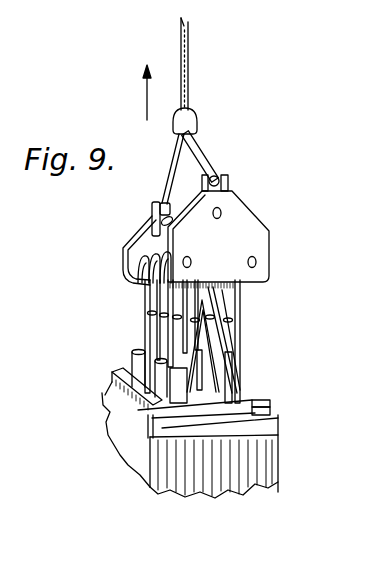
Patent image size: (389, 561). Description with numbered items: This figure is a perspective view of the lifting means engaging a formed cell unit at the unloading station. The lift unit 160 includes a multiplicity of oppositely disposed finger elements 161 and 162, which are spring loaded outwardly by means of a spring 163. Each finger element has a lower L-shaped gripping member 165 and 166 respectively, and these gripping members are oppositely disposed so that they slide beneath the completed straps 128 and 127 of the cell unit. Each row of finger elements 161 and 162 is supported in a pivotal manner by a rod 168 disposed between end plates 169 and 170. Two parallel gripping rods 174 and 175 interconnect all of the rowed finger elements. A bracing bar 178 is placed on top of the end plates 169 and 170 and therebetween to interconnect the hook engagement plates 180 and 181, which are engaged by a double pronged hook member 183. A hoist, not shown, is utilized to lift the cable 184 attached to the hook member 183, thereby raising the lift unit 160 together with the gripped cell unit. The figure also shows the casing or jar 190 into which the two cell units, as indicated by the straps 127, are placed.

The cable 184 is at (186, 51).
The double pronged hook member 183 is at (204, 158).
The hook engagement plate 181 is at (233, 173).
The lift unit 160 is at (245, 217).
The end plate 170 is at (252, 238).
The bracing bar 178 is at (222, 213).
The rod 168 is at (257, 259).
The hook engagement plate 180 is at (159, 206).
The end plate 169 is at (130, 234).
The finger element 161 is at (152, 302).
The gripping rod 174 is at (192, 318).
The spring 163 is at (232, 306).
The finger element 162 is at (232, 314).
The gripping rod 175 is at (236, 321).
The strap 127 is at (105, 396).
The strap 128 is at (258, 397).
The L-shaped gripping member 166 is at (250, 419).
The casing or jar 190 is at (268, 458).
The L-shaped gripping member 165 is at (153, 443).